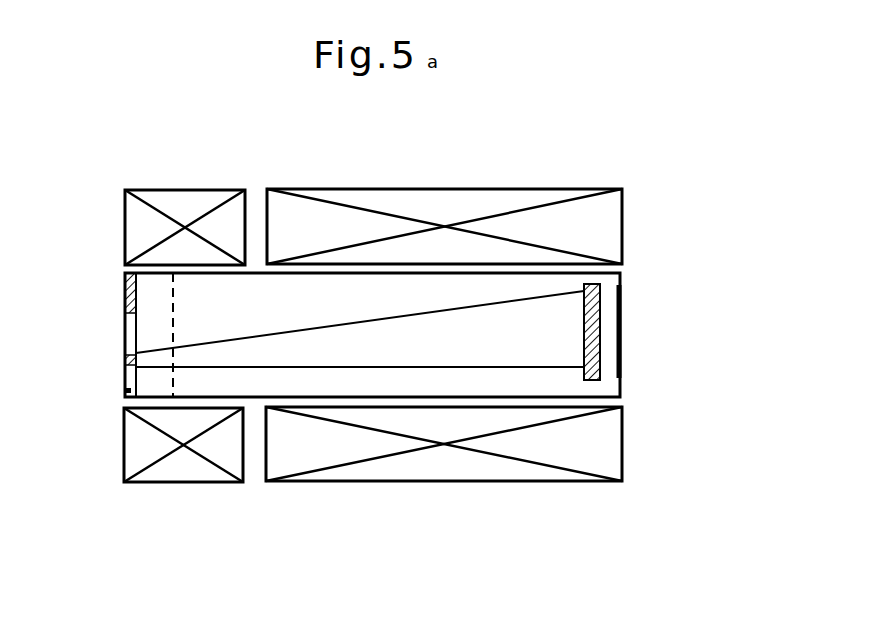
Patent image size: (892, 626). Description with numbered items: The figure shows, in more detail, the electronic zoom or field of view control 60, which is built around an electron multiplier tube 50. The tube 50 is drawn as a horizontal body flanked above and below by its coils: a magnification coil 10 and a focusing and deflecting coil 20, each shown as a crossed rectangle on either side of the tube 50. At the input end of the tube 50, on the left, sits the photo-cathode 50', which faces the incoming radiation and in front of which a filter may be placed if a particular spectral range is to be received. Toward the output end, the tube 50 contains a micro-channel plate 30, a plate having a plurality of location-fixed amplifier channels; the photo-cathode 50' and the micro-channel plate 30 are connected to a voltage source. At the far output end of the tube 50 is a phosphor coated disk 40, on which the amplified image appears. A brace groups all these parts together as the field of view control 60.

The magnification coil 10 is at (145, 225).
The focusing and deflecting coil 20 is at (593, 217).
The micro-channel plate 30 is at (584, 327).
The phosphor coated disk 40 is at (623, 337).
The electron multiplier tube 50 is at (96, 382).
The photo-cathode 50' is at (102, 293).
The electronic zoom or field of view control 60 is at (415, 331).